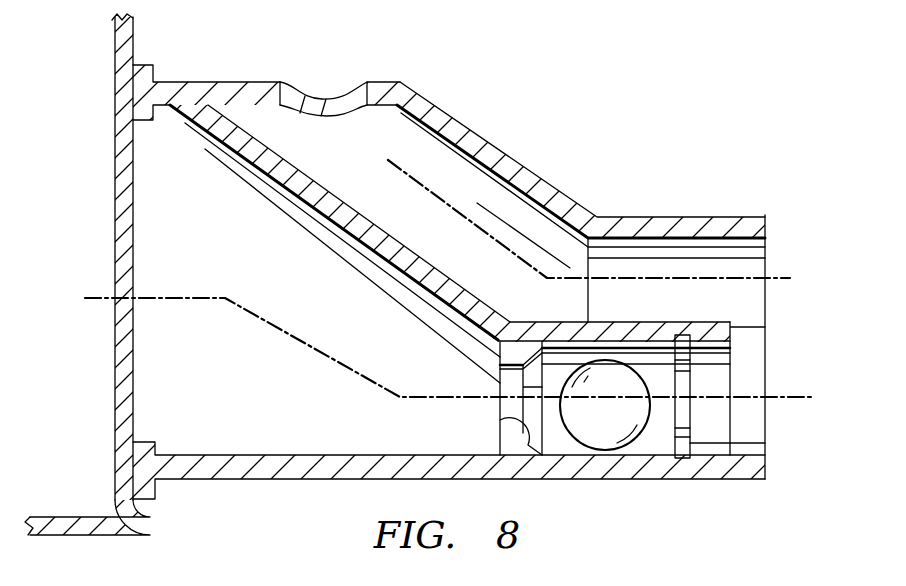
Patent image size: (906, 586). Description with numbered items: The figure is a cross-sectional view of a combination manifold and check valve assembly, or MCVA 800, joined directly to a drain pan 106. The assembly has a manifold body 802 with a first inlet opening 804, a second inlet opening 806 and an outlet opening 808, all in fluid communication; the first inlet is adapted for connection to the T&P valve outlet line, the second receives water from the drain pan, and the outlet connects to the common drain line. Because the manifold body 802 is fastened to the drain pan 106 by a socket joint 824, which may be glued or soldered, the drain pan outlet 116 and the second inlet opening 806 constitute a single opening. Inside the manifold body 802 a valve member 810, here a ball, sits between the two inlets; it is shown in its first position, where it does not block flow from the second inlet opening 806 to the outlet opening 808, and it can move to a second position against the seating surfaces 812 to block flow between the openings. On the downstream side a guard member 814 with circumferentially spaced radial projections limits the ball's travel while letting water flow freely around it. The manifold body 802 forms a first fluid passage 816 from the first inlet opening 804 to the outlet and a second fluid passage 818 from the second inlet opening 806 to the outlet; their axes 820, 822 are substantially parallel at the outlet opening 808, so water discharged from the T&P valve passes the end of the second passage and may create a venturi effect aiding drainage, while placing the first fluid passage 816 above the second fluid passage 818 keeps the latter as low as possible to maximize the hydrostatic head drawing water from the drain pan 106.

The drain pan outlet 116 is at (102, 161).
The drain pan 106 is at (70, 517).
The socket joint 824 is at (164, 68).
The combination manifold and check valve assembly 800 is at (563, 110).
The first inlet opening 804 is at (337, 128).
The manifold body 802 is at (453, 112).
The second inlet opening 806 is at (158, 256).
The outlet opening 808 is at (785, 311).
The valve member 810 is at (650, 437).
The seating surfaces 812 is at (500, 420).
The guard member 814 is at (692, 417).
The first fluid passage 816 is at (407, 239).
The second fluid passage 818 is at (367, 361).
The axis of the first fluid passage 820 is at (781, 275).
The axis of the second fluid passage 822 is at (795, 393).